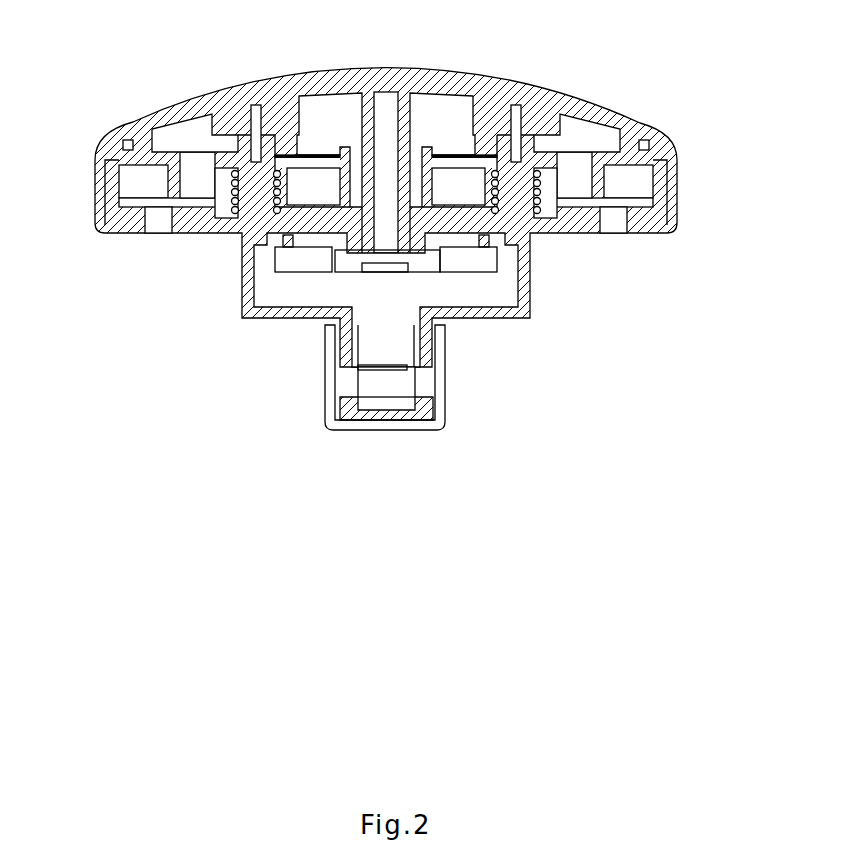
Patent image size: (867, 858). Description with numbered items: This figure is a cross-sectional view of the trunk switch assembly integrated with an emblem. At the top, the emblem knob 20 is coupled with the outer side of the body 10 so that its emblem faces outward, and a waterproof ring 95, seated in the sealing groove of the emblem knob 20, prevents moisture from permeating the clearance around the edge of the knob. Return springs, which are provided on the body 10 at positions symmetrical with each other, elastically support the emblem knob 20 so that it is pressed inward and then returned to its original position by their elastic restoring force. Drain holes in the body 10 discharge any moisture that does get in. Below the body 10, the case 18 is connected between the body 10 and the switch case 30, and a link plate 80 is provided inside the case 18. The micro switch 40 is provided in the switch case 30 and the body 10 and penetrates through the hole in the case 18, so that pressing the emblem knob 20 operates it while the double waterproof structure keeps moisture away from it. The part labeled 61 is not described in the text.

The body 10 is at (660, 218).
The emblem knob 20 is at (384, 76).
The switch case 30 is at (386, 428).
The micro switch 40 is at (396, 384).
The case 18 is at (279, 312).
The ring 61 is at (118, 152).
The link plate 80 is at (285, 262).
The waterproof ring 95 is at (135, 127).